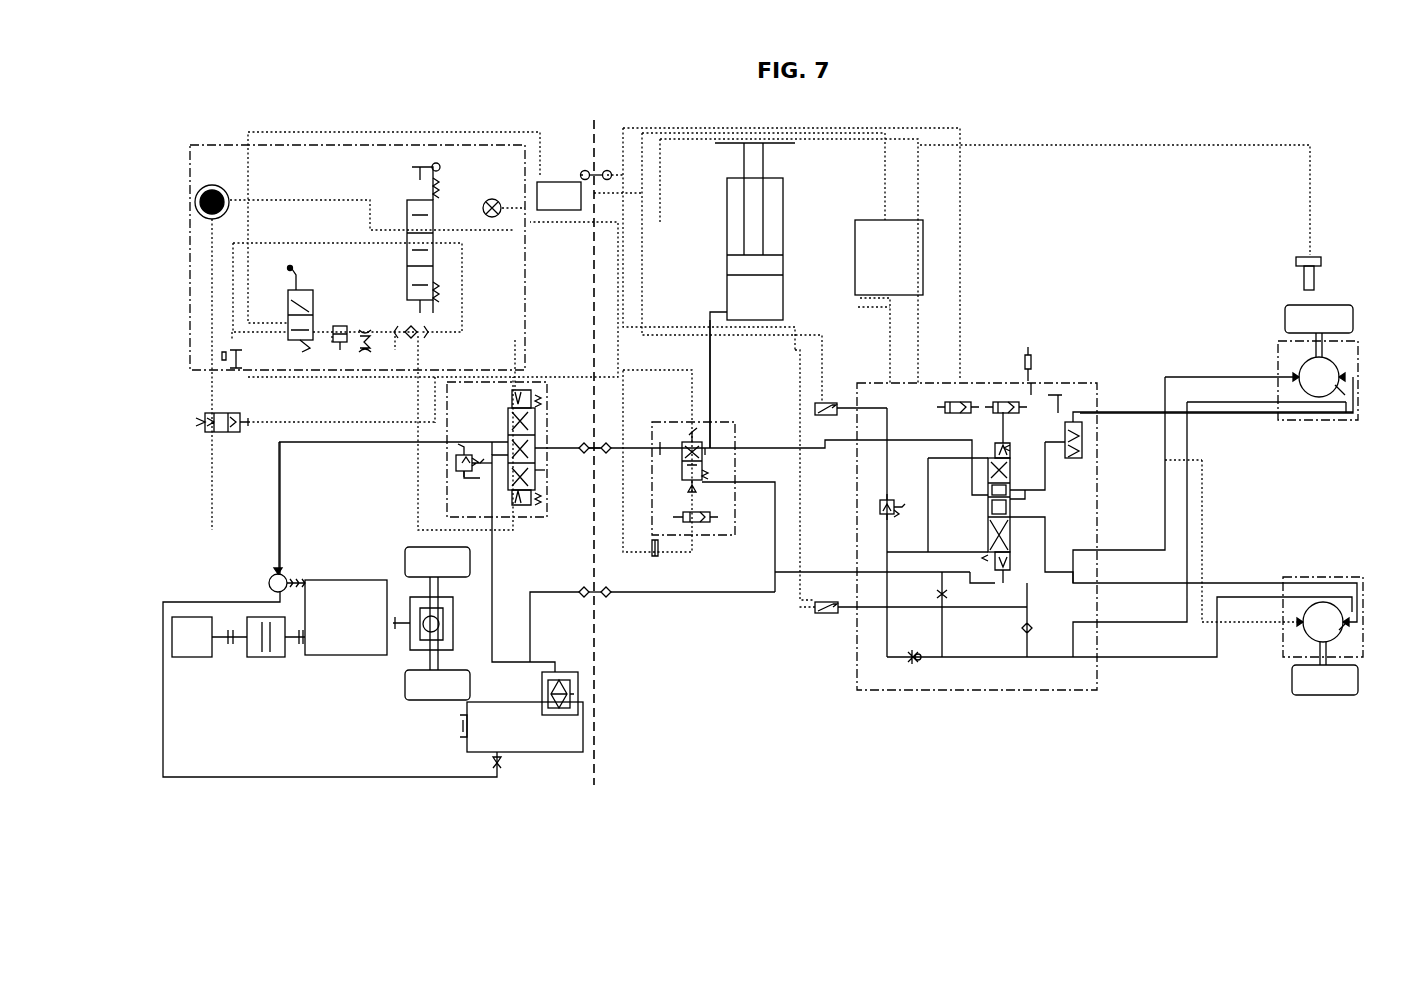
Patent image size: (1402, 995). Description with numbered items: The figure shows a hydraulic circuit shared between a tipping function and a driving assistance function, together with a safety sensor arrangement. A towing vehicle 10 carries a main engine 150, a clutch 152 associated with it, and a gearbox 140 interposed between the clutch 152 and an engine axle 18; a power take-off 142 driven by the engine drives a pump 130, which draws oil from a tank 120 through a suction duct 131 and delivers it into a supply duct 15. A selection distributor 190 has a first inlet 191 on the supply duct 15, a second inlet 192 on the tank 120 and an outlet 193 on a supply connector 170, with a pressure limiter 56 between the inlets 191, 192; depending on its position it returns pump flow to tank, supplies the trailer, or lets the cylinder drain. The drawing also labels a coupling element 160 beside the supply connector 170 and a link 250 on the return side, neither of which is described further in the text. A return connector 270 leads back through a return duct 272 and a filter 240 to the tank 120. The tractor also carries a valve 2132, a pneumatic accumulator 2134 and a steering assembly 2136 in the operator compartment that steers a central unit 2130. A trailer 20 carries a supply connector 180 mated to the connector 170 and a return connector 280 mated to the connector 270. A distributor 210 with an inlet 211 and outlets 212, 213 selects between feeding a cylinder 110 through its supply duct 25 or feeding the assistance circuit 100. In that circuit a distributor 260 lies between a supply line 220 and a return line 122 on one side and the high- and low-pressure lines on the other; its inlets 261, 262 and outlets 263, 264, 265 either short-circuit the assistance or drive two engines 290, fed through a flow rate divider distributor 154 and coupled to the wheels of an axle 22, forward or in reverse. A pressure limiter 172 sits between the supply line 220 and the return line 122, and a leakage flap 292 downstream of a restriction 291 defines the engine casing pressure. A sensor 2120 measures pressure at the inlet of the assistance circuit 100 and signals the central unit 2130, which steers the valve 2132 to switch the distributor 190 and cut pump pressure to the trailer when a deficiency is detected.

The towing vehicle 10 is at (336, 795).
The supply duct 15 is at (282, 490).
The engine axle 18 is at (436, 716).
The trailer 20 is at (956, 725).
The axle 22 is at (1344, 268).
The supply duct of the cylinder 25 is at (708, 352).
The pressure limiter 56 is at (452, 464).
The assistance circuit 100 is at (1072, 325).
The cylinder 110 is at (722, 245).
The tank 120 is at (535, 755).
The return line 122 is at (912, 574).
The pump 130 is at (266, 580).
The suction duct 131 is at (435, 778).
The gearbox 140 is at (348, 640).
The power take-off 142 is at (300, 578).
The main engine 150 is at (193, 660).
The clutch 152 is at (268, 660).
The flow rate divider distributor 154 is at (1090, 440).
The coupling half 160 is at (572, 440).
The supply connector 170 is at (585, 443).
The pressure limiter 172 is at (872, 508).
The supply connector 180 is at (617, 440).
The selection distributor 190 is at (540, 500).
The first inlet 191 is at (492, 438).
The second inlet 192 is at (482, 468).
The outlet 193 is at (542, 470).
The distributor 210 is at (692, 440).
The inlet 211 is at (660, 445).
The outlet 212 is at (708, 448).
The outlet 213 is at (708, 470).
The supply line 220 is at (782, 452).
The filter 240 is at (590, 693).
The return line 250 is at (740, 593).
The distributor 260 is at (1020, 537).
The first inlet 261 is at (972, 478).
The second inlet 262 is at (972, 528).
The first outlet 263 is at (1030, 480).
The second outlet 264 is at (1050, 548).
The third outlet 265 is at (1022, 500).
The return connector 270 is at (592, 600).
The return duct 272 is at (532, 630).
The return connector 280 is at (616, 598).
The engines 290 is at (1260, 350).
The restriction 291 is at (950, 598).
The leakage flap 292 is at (912, 665).
The sensor 2120 is at (836, 402).
The central unit 2130 is at (856, 250).
The valve 2132 is at (226, 440).
The pneumatic accumulator 2134 is at (232, 187).
The steering assembly 2136 is at (350, 185).